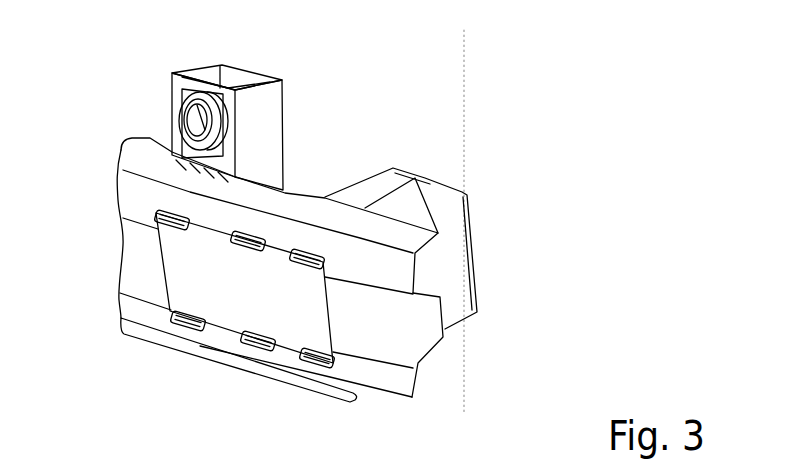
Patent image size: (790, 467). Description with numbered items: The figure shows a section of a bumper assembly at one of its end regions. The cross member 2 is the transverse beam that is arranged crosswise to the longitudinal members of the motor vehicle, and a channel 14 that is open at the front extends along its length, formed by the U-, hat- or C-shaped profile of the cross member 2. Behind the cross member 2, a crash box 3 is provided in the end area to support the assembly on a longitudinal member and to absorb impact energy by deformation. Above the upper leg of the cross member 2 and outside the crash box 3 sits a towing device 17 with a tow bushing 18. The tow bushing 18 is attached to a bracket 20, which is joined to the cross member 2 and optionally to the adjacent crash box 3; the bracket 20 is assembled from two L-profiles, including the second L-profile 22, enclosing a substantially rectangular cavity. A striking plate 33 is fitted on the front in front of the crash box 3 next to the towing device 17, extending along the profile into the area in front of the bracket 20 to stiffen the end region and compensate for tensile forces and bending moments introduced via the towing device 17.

The cross member 2 is at (418, 366).
The crash box 3 is at (432, 193).
The channel 14 is at (423, 332).
The towing device 17 is at (141, 113).
The tow bushing 18 is at (178, 103).
The bracket 20 is at (306, 123).
The second L-profile 22 is at (239, 392).
The striking plate 33 is at (220, 318).